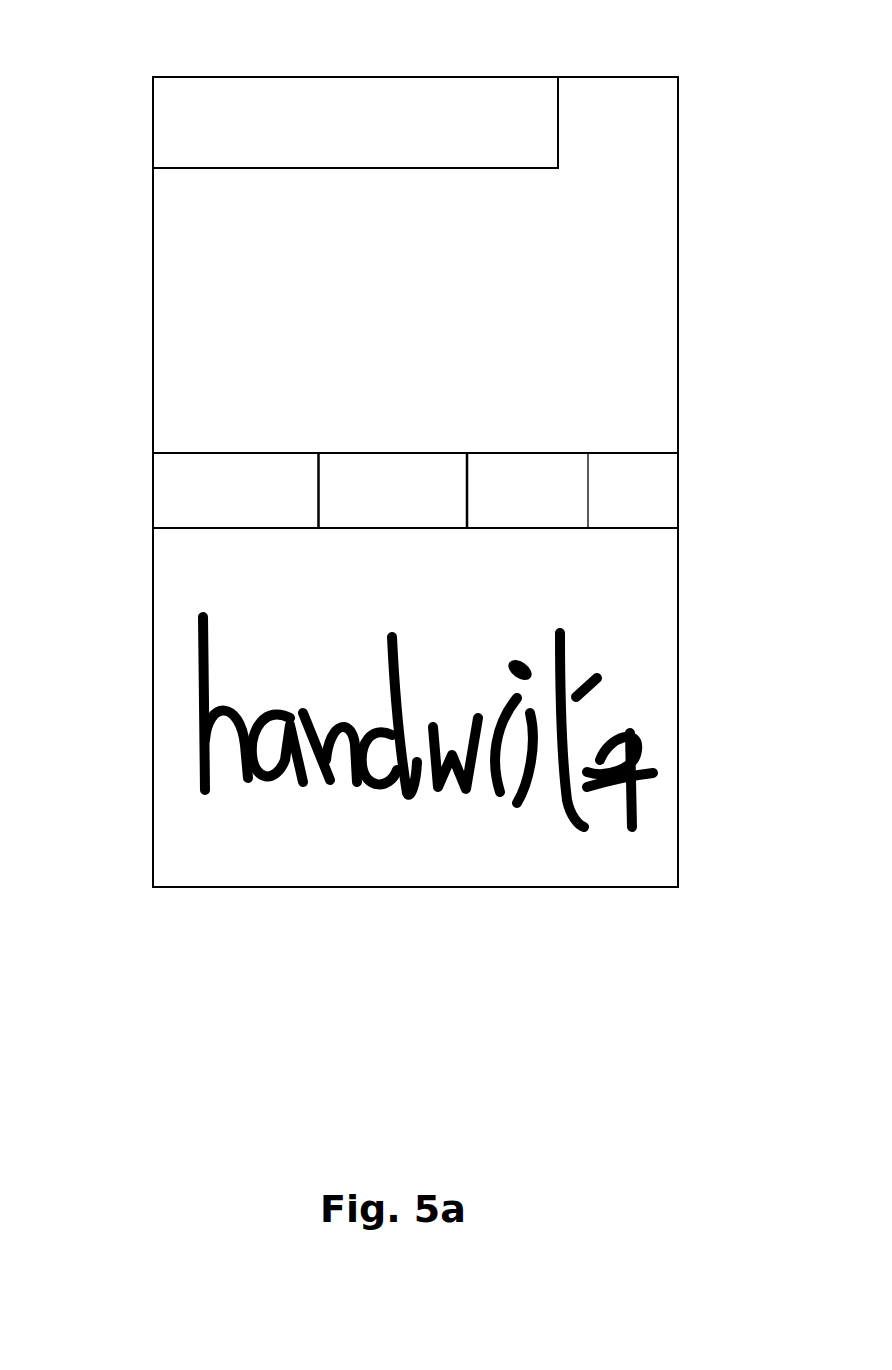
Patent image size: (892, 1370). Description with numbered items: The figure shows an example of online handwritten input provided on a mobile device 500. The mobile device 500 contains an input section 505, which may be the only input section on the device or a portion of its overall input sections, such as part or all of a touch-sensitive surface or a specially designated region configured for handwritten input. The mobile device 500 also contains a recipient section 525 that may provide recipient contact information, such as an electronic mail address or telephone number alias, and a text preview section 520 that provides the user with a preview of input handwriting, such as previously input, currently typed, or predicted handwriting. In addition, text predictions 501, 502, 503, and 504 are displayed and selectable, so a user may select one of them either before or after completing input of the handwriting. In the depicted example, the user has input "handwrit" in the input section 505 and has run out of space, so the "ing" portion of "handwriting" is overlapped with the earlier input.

The mobile device 500 is at (643, 980).
The recipient section 525 is at (183, 108).
The text preview section 520 is at (183, 352).
The text prediction 501 is at (255, 502).
The text prediction 502 is at (412, 502).
The text prediction 503 is at (547, 502).
The text prediction 504 is at (652, 502).
The input section 505 is at (183, 708).